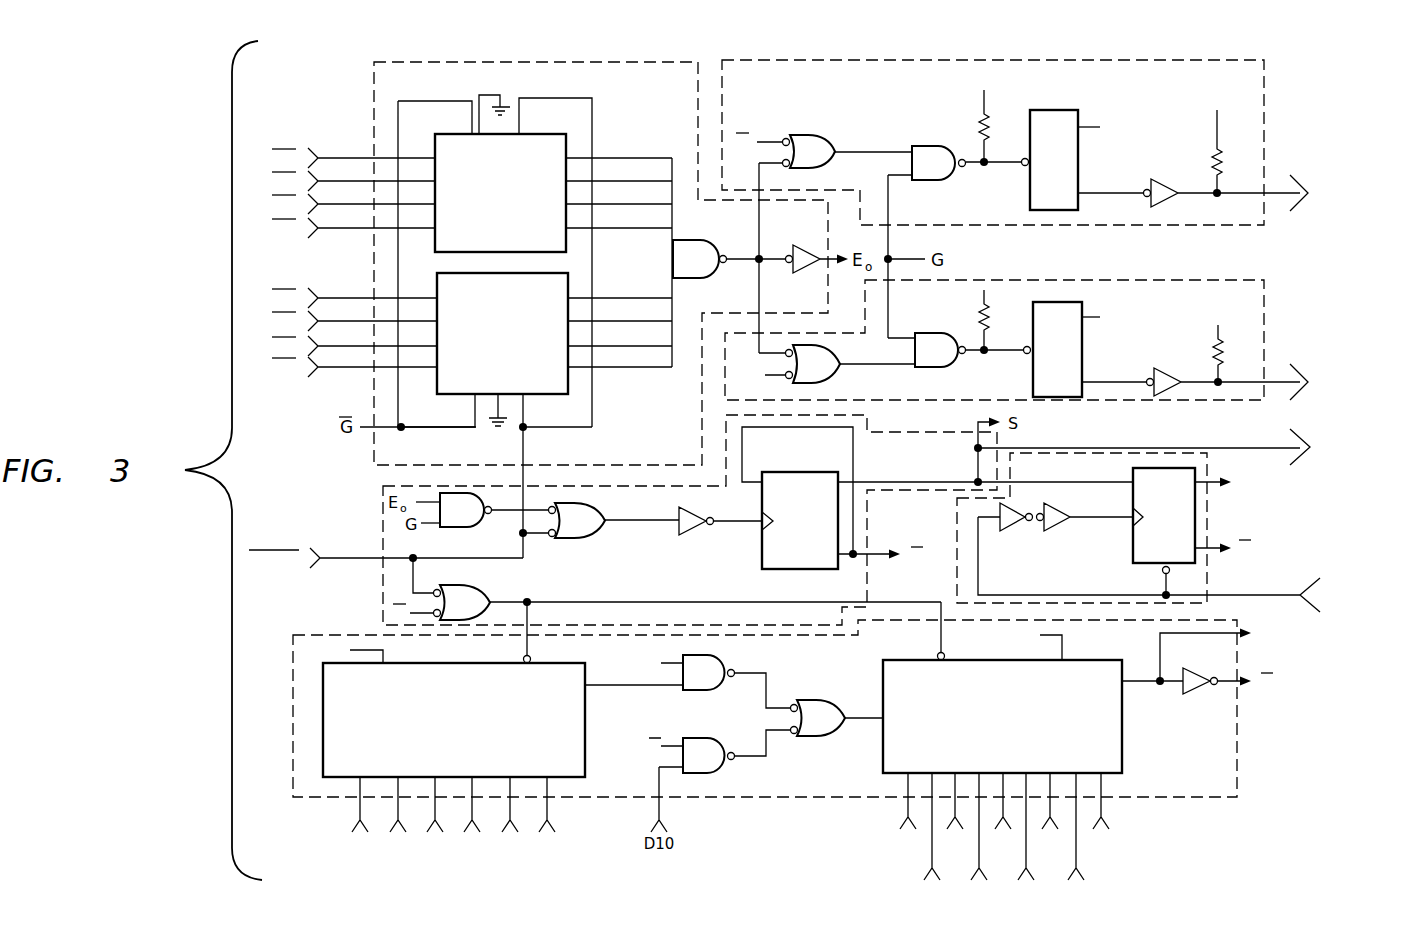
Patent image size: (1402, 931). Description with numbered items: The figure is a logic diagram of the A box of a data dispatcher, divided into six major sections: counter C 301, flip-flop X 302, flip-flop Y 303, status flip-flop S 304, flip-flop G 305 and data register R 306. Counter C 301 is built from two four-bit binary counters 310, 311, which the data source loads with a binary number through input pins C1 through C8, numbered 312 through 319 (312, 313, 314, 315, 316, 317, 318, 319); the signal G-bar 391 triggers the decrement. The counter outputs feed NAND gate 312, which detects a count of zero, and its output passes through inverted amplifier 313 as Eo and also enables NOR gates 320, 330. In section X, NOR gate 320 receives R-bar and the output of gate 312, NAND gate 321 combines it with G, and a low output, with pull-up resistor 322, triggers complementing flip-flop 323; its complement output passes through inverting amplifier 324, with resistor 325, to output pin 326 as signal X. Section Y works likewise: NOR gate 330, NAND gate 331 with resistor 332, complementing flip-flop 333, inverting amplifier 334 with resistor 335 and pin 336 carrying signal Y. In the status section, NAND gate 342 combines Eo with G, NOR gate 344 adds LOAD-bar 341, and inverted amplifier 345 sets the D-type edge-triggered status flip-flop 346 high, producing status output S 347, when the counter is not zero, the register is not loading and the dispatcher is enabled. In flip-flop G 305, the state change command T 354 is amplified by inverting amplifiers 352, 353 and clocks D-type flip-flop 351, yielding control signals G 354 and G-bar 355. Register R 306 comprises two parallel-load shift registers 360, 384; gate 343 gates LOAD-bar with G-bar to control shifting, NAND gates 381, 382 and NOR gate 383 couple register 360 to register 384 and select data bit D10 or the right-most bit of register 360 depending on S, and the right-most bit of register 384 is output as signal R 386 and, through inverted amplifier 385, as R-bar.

The counter C 301 is at (545, 61).
The flip-flop X 302 is at (838, 60).
The flip-flop Y 303 is at (1266, 306).
The status flip-flop S 304 is at (383, 506).
The flip-flop G 305 is at (1208, 573).
The data register R 306 is at (345, 634).
The four-bit binary counter 310 is at (527, 134).
The four-bit binary counter 311 is at (532, 398).
The NAND gate / input pin C1 312 is at (320, 157).
The inverted amplifier / input pin C2 313 is at (320, 180).
The input pin C3 314 is at (320, 203).
The input pin C4 315 is at (320, 227).
The input pin C5 316 is at (320, 297).
The input pin C6 317 is at (320, 320).
The input pin C7 318 is at (320, 345).
The input pin C8 319 is at (320, 366).
The NOR gate 320 is at (835, 118).
The NAND gate 321 is at (918, 146).
The 2K pull-up resistor 322 is at (990, 118).
The complementing flip-flop 323 is at (1068, 110).
The inverting amplifier 324 is at (1160, 178).
The 220 ohm pull-up resistor 325 is at (1222, 145).
The output pin X 326 is at (1322, 155).
The NOR gate 330 is at (830, 383).
The NAND gate 331 is at (930, 367).
The 2K pull-up resistor 332 is at (990, 316).
The complementing flip-flop 333 is at (1082, 305).
The inverting amplifier 334 is at (1160, 368).
The 220 ohm pull-up resistor 335 is at (1232, 348).
The output pin Y 336 is at (1328, 348).
The LOAD-bar signal 341 is at (320, 555).
The NAND gate 342 is at (458, 527).
The gate 343 is at (475, 585).
The NOR gate 344 is at (592, 538).
The inverted amplifier 345 is at (692, 535).
The status flip-flop 346 is at (795, 569).
The output S 347 is at (1300, 453).
The D-type edge triggered flip-flop 351 is at (1133, 506).
The inverting amplifier 352 is at (1012, 531).
The inverting amplifier 353 is at (1060, 531).
The signal G / state change command signal T 354 is at (1218, 484).
The control signal G-bar 355 is at (1232, 545).
The shift register 360 is at (586, 720).
The NAND gate 381 is at (698, 690).
The NAND gate 382 is at (722, 768).
The NOR gate 383 is at (835, 736).
The shift register 384 is at (884, 660).
The inverted amplifier 385 is at (1215, 650).
The signal R 386 is at (1160, 640).
The signal G-bar 391 is at (404, 424).